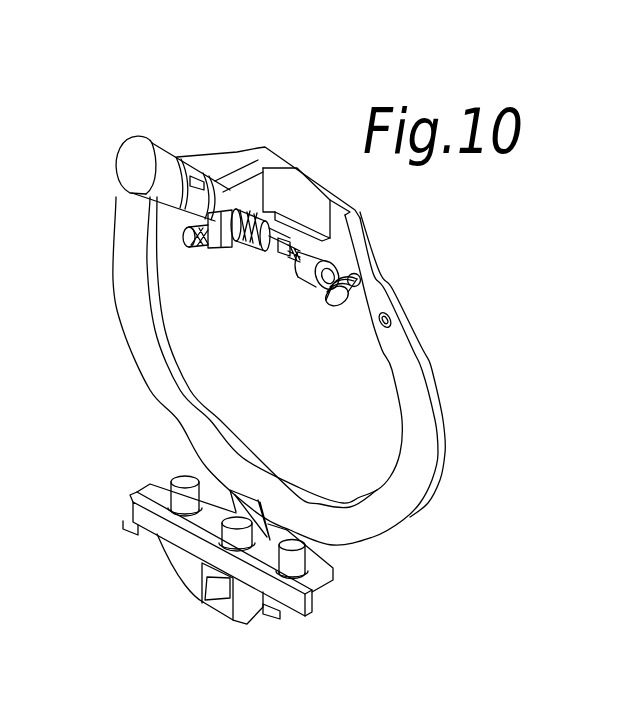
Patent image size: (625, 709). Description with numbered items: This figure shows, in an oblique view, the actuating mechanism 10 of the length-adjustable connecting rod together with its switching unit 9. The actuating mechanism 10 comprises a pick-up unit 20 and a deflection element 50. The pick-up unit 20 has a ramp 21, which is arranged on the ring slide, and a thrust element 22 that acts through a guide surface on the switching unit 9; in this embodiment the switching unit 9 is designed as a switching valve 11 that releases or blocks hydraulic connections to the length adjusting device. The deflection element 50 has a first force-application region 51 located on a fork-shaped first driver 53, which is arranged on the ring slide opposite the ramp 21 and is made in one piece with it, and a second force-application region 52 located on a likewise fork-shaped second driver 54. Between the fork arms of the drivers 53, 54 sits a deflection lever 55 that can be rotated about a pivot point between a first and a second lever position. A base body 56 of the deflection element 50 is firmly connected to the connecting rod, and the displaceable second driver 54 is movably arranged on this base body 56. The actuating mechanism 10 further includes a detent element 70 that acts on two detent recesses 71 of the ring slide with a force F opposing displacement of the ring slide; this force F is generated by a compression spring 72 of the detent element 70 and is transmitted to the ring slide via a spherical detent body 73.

The switching unit 9 is at (175, 197).
The actuating mechanism 10 is at (421, 247).
The switching valve 11 is at (170, 165).
The pick-up unit 20 is at (255, 178).
The ramp 21 is at (277, 178).
The thrust element 22 is at (214, 222).
The deflection element 50 is at (323, 610).
The first force-application region 51 is at (195, 478).
The second force-application region 52 is at (177, 581).
The first driver 53 is at (290, 533).
The second driver 54 is at (248, 618).
The deflection lever 55 is at (210, 590).
The base body 56 is at (318, 572).
The detent element 70 is at (350, 313).
The detent recesses 71 is at (382, 328).
The compression spring 72 is at (328, 303).
The spherical detent body 73 is at (361, 280).
The force F is at (338, 255).